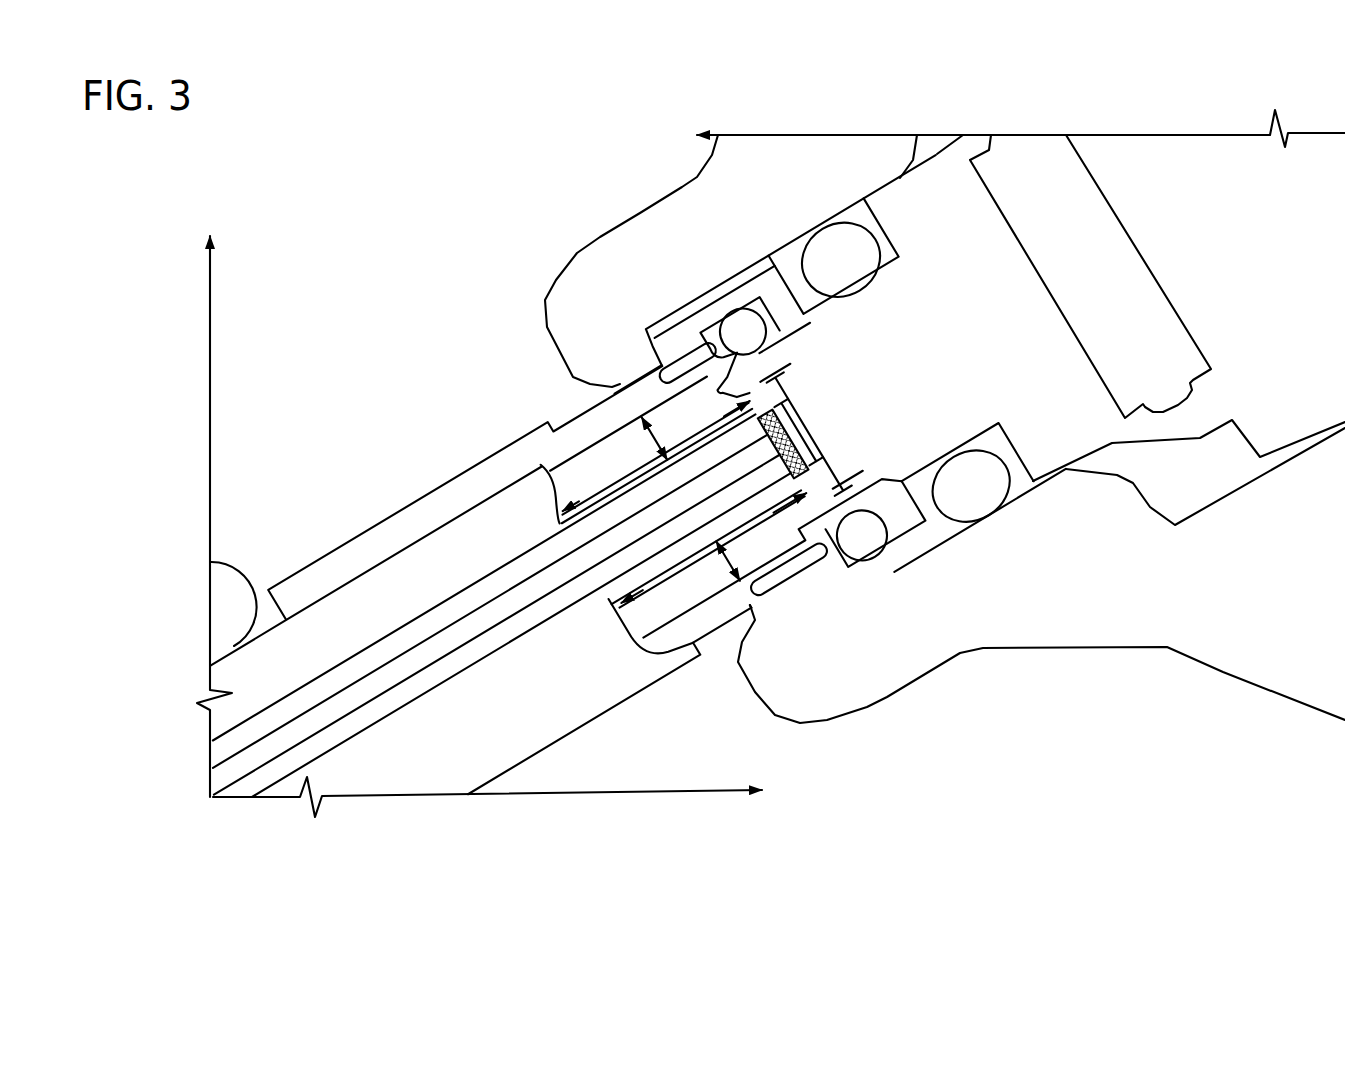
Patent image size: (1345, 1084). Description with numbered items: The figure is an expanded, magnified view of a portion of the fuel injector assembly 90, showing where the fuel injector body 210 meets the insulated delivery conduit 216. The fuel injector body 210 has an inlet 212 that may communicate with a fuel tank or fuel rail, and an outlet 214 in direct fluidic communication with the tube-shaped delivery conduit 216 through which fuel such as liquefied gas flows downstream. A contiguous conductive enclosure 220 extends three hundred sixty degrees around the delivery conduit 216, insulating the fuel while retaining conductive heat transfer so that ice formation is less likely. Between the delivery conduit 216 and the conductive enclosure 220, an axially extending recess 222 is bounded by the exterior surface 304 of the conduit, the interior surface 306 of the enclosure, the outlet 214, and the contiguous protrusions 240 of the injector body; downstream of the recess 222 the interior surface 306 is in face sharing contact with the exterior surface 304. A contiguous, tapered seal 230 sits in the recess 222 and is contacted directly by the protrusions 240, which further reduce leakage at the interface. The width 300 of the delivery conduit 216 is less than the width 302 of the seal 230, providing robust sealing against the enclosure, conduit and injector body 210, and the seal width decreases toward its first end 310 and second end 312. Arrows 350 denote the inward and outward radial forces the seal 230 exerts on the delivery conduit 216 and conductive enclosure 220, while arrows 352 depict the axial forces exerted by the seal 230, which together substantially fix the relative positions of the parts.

The fuel injector assembly 90 is at (345, 342).
The fuel injector body 210 is at (1019, 390).
The inlet 212 is at (1132, 262).
The outlet 214 is at (815, 412).
The delivery conduit 216 is at (487, 595).
The conductive enclosure 220 is at (402, 591).
The recess 222 is at (610, 400).
The seal 230 is at (694, 436).
The contiguous protrusions 240 is at (810, 323).
The width of the delivery conduit 300 is at (795, 420).
The width of the seal 302 is at (827, 440).
The exterior surface 304 is at (622, 478).
The interior surface 306 is at (548, 481).
The first end of the seal 310 is at (563, 525).
The second end of the seal 312 is at (790, 364).
The arrows 350 is at (635, 438).
The arrows 352 is at (566, 496).